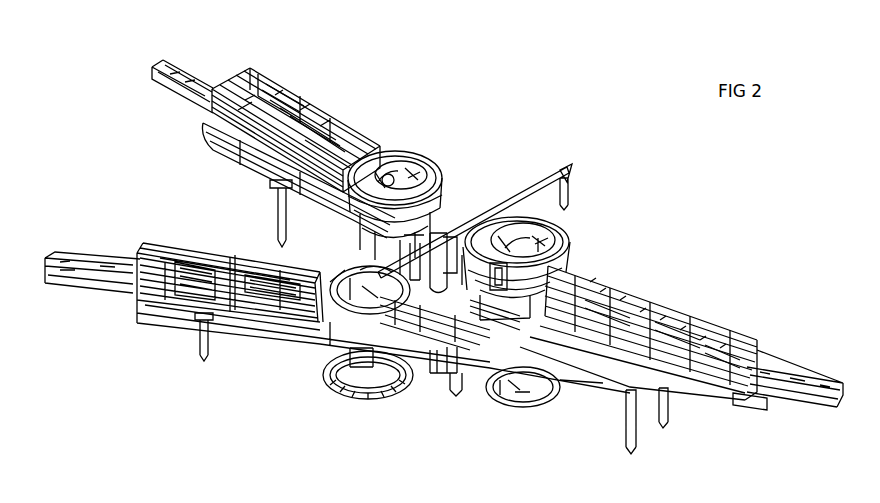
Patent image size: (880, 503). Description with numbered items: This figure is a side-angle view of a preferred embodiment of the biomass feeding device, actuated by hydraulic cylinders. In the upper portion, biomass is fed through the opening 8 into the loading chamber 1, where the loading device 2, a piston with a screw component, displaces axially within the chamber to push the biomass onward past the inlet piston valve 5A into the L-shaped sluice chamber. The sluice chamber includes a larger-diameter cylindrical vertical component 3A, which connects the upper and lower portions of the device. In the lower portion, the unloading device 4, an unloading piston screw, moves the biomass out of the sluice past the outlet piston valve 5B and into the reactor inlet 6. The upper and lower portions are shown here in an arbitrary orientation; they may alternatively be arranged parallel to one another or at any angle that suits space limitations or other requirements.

The loading chamber 1 is at (448, 213).
The loading device 2 is at (693, 372).
The vertical component of the L-shaped sluice chamber 3A is at (392, 190).
The unloading device 4 is at (95, 275).
The inlet piston valve 5A is at (200, 87).
The outlet piston valve 5B is at (787, 382).
The reactor inlet 6 is at (533, 388).
The opening to the loading chamber 8 is at (548, 237).